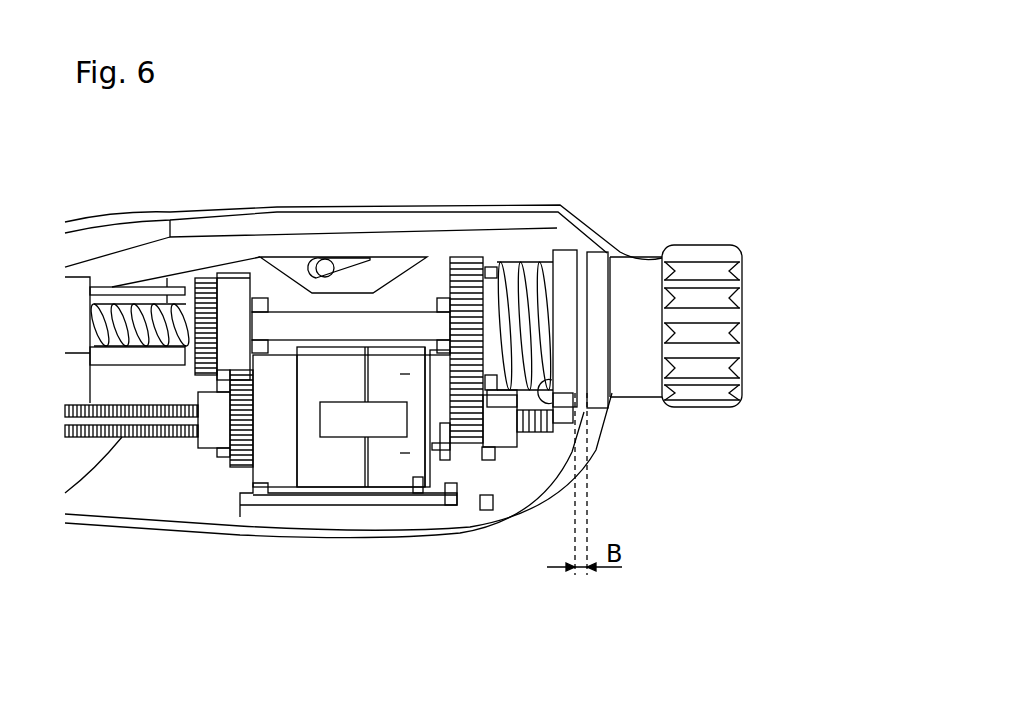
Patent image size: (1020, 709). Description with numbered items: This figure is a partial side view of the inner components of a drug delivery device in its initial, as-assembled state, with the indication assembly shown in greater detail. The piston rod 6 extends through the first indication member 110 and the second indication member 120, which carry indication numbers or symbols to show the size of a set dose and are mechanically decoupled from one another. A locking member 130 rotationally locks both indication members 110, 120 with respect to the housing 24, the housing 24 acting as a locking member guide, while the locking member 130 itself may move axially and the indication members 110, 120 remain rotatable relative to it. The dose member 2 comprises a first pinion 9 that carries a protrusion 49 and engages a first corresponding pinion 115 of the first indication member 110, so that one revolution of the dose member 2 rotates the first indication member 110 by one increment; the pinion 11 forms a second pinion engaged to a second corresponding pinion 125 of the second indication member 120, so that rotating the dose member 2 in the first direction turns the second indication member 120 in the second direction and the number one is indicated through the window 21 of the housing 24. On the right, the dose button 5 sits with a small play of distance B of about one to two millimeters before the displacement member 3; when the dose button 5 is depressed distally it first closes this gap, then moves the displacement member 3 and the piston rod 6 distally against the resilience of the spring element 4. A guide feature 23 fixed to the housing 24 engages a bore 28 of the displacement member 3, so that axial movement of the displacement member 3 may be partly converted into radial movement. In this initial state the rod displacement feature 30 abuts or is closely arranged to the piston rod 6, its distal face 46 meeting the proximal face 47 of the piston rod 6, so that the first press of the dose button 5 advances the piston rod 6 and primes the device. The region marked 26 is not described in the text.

The dose member 2 is at (275, 322).
The displacement member 3 is at (560, 250).
The spring element 4 is at (520, 267).
The dose button 5 is at (733, 260).
The piston rod 6 is at (138, 420).
The first pinion 9 is at (237, 297).
The pinion 11 is at (470, 267).
The window 21 is at (397, 437).
The guide feature 23 is at (323, 265).
The housing 24 is at (82, 220).
The housing end 26 is at (849, 290).
The bore 28 is at (383, 250).
The rod displacement feature 30 is at (563, 417).
The distal face 46 is at (542, 377).
The proximal face 47 is at (557, 468).
The protrusion 49 is at (223, 277).
The first indication member 110 is at (308, 473).
The first corresponding pinion 115 is at (238, 458).
The second indication member 120 is at (385, 468).
The second corresponding pinion 125 is at (485, 505).
The locking member 130 is at (468, 445).